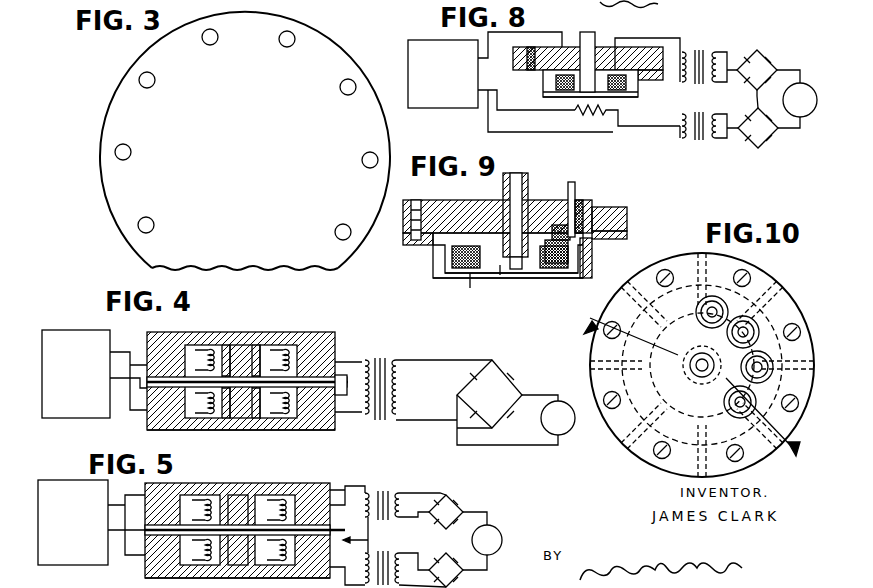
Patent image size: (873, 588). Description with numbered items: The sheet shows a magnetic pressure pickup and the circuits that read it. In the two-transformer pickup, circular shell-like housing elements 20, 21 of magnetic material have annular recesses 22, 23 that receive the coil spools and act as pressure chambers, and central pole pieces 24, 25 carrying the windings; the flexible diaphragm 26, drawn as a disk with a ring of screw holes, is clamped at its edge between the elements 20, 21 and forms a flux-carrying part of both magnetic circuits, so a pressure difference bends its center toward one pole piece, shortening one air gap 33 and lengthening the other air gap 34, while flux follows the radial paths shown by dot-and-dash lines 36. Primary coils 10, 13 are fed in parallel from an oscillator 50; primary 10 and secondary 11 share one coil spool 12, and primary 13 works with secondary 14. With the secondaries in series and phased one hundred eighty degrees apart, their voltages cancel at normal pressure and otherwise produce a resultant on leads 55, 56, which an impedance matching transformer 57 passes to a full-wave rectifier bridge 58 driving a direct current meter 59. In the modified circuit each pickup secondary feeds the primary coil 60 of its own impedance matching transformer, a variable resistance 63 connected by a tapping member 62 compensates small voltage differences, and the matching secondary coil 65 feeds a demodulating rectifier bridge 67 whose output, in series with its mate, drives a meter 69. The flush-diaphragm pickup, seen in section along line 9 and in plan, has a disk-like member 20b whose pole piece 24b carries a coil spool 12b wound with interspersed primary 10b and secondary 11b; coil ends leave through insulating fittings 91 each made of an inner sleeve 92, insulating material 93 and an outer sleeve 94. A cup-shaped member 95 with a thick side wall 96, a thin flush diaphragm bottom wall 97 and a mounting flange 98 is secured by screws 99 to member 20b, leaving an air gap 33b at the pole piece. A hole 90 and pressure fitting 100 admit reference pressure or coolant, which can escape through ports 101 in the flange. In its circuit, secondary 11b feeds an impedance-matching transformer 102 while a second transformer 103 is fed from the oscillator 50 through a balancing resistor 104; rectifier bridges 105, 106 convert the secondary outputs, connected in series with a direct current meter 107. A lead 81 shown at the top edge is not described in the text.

In FIG. 3, the diaphragm 26 is at (330, 53).
In FIG. 4, the diaphragm 26 is at (213, 418).
In FIG. 8, the oscillator 50 is at (445, 98).
In FIG. 4, the oscillator 50 is at (85, 418).
In FIG. 5, the oscillator 50 is at (80, 565).
In FIG. 4, the primary coil 10 is at (200, 345).
In FIG. 5, the primary coil 10 is at (212, 498).
In FIG. 4, the secondary coil 11 is at (293, 345).
In FIG. 5, the secondary coil 11 is at (303, 498).
In FIG. 4, the coil spool 12 is at (204, 360).
In FIG. 5, the coil spool 12 is at (195, 565).
In FIG. 4, the primary coil 13 is at (200, 413).
In FIG. 4, the secondary coil 14 is at (292, 418).
In FIG. 4, the shell-like housing element 20 is at (330, 343).
In FIG. 5, the shell-like housing element 20 is at (148, 490).
In FIG. 4, the shell-like housing element 21 is at (333, 430).
In FIG. 5, the shell-like housing element 21 is at (235, 581).
In FIG. 4, the annular recess 22 is at (227, 345).
In FIG. 4, the annular recess 23 is at (348, 388).
In FIG. 4, the pole piece 24 is at (242, 345).
In FIG. 4, the pole piece 25 is at (236, 418).
In FIG. 4, the air gap 33 is at (267, 345).
In FIG. 4, the air gap 34 is at (262, 418).
In FIG. 9, the flux path lines 36 is at (590, 265).
In FIG. 4, the flux path lines 36 is at (150, 410).
In FIG. 4, the output lead 55 is at (364, 360).
In FIG. 4, the output lead 56 is at (377, 420).
In FIG. 4, the impedance matching transformer 57 is at (386, 420).
In FIG. 4, the full-wave rectifier bridge 58 is at (518, 378).
In FIG. 4, the direct current meter 59 is at (541, 422).
In FIG. 5, the primary coil 60 is at (349, 507).
In FIG. 5, the tapping member 62 is at (369, 535).
In FIG. 5, the variable resistance 63 is at (348, 548).
In FIG. 5, the secondary coil 65 is at (404, 495).
In FIG. 5, the demodulating rectifier bridge 67 is at (460, 512).
In FIG. 5, the direct current meter 69 is at (495, 535).
In FIG. 8, the cable 81 is at (640, 8).
In FIG. 9, the hole 90 is at (518, 269).
In FIG. 10, the hole 90 is at (698, 375).
In FIG. 9, the pressure-tight insulating fitting 91 is at (578, 182).
In FIG. 10, the pressure-tight insulating fitting 91 is at (698, 325).
In FIG. 9, the inner sleeve 92 is at (583, 205).
In FIG. 10, the inner sleeve 92 is at (728, 310).
In FIG. 9, the insulating material 93 is at (565, 194).
In FIG. 10, the insulating material 93 is at (730, 317).
In FIG. 9, the outer sleeve 94 is at (551, 204).
In FIG. 10, the outer sleeve 94 is at (716, 298).
In FIG. 9, the cup-shaped member 95 is at (430, 258).
In FIG. 8, the peripheral side wall 96 is at (543, 90).
In FIG. 9, the peripheral side wall 96 is at (435, 268).
In FIG. 8, the bottom wall 97 is at (548, 97).
In FIG. 9, the bottom wall 97 is at (448, 278).
In FIG. 8, the mounting flange 98 is at (520, 66).
In FIG. 9, the mounting flange 98 is at (410, 240).
In FIG. 9, the screws 99 is at (418, 190).
In FIG. 10, the screws 99 is at (670, 274).
In FIG. 9, the pressure fitting 100 is at (525, 176).
In FIG. 10, the pressure fitting 100 is at (699, 354).
In FIG. 9, the ports 101 is at (627, 236).
In FIG. 10, the ports 101 is at (650, 420).
In FIG. 8, the impedance-matching transformer 102 is at (700, 48).
In FIG. 8, the second transformer 103 is at (700, 142).
In FIG. 8, the resistor 104 is at (588, 116).
In FIG. 8, the demodulating rectifier bridge 105 is at (770, 62).
In FIG. 8, the demodulating rectifier bridge 106 is at (760, 145).
In FIG. 8, the direct current meter 107 is at (805, 117).
In FIG. 8, the primary coil 10b is at (565, 97).
In FIG. 9, the primary coil 10b is at (465, 215).
In FIG. 8, the secondary coil 11b is at (648, 80).
In FIG. 9, the secondary coil 11b is at (455, 220).
In FIG. 9, the coil spool 12b is at (470, 288).
In FIG. 10, the coil spool 12b is at (640, 440).
In FIG. 8, the disk-like member 20b is at (665, 70).
In FIG. 9, the disk-like member 20b is at (627, 218).
In FIG. 10, the disk-like member 20b is at (688, 475).
In FIG. 9, the pole piece 24b is at (500, 278).
In FIG. 10, the pole piece 24b is at (705, 385).
In FIG. 9, the air gap 33b is at (540, 273).
In FIG. 10, the section line 9 is at (689, 388).